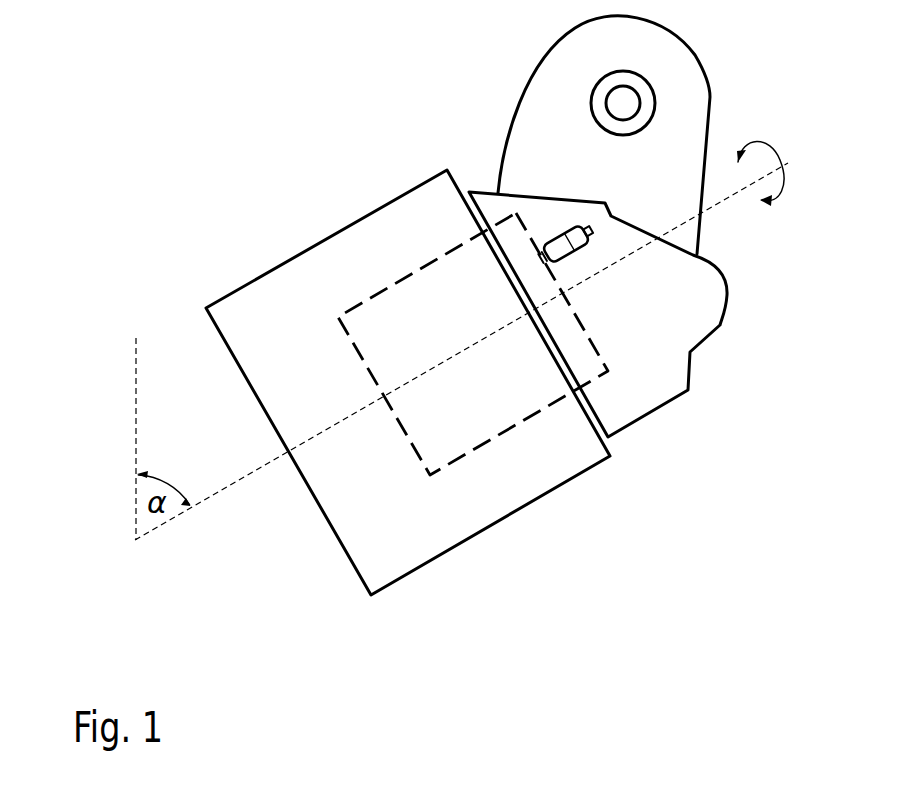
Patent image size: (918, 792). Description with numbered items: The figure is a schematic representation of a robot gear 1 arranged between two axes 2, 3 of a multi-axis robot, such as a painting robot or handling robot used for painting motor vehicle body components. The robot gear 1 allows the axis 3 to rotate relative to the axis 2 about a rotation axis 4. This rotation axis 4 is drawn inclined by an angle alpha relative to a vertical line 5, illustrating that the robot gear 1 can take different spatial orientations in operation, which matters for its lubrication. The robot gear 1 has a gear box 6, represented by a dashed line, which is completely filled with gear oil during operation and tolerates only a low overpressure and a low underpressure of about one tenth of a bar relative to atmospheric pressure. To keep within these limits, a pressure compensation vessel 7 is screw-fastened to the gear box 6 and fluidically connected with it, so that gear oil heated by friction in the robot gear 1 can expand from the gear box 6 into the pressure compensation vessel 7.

The robot gear 1 is at (495, 305).
The axis 2 is at (500, 518).
The axis 3 is at (687, 325).
The rotation axis 4 is at (263, 465).
The vertical line 5 is at (135, 380).
The gear box 6 is at (420, 268).
The pressure compensation vessel 7 is at (577, 242).